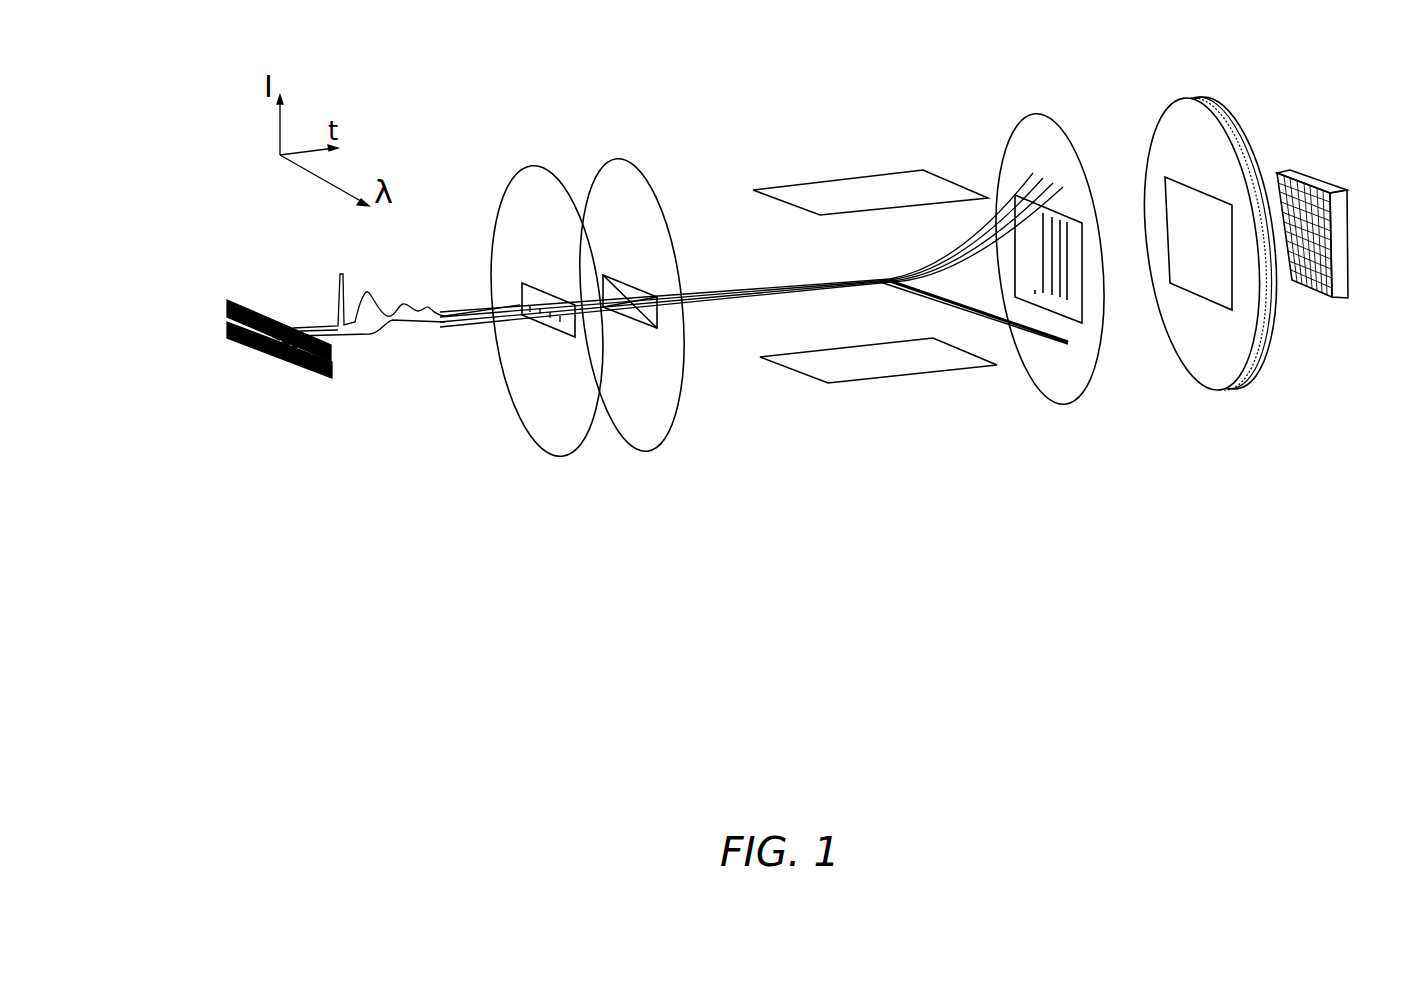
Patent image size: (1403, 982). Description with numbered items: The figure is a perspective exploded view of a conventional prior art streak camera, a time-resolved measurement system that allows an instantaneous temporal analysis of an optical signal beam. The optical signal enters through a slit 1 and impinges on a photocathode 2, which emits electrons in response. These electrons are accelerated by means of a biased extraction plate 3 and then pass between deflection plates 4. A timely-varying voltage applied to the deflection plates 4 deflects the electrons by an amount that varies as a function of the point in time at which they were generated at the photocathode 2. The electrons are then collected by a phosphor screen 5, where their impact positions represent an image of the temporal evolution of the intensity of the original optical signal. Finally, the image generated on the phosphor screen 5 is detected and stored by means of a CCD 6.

The slit 1 is at (218, 318).
The photocathode 2 is at (538, 450).
The biased extraction plate 3 is at (658, 445).
The deflection plates 4 is at (842, 218).
The phosphor screen 5 is at (1053, 412).
The CCD 6 is at (1325, 310).